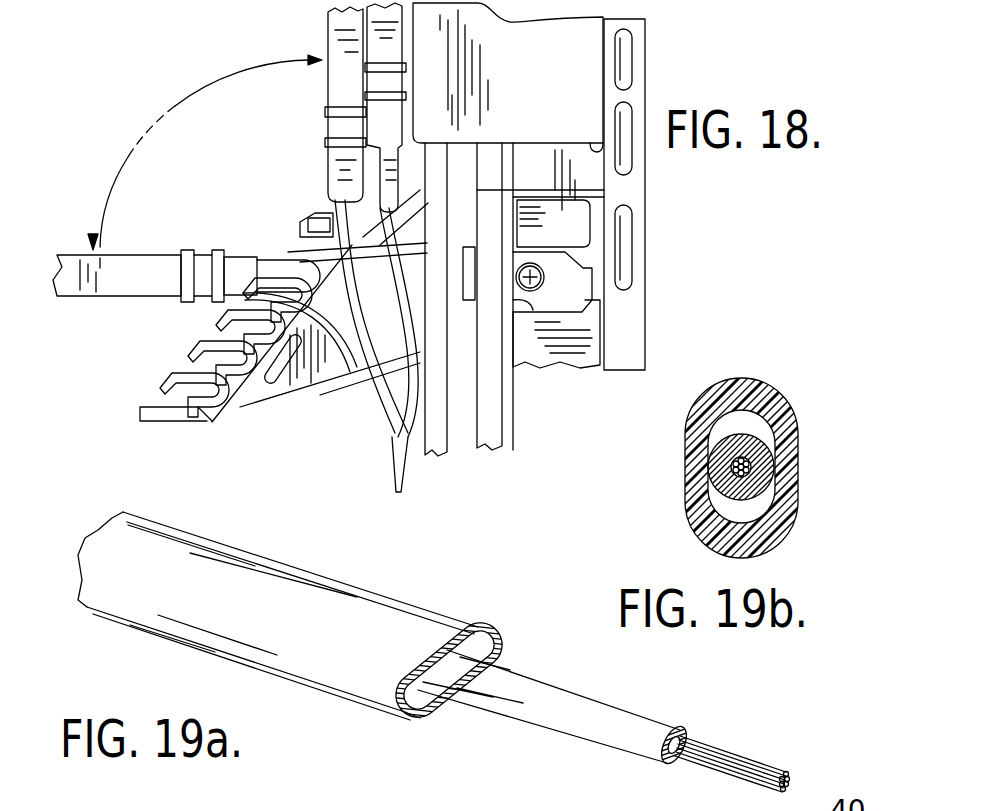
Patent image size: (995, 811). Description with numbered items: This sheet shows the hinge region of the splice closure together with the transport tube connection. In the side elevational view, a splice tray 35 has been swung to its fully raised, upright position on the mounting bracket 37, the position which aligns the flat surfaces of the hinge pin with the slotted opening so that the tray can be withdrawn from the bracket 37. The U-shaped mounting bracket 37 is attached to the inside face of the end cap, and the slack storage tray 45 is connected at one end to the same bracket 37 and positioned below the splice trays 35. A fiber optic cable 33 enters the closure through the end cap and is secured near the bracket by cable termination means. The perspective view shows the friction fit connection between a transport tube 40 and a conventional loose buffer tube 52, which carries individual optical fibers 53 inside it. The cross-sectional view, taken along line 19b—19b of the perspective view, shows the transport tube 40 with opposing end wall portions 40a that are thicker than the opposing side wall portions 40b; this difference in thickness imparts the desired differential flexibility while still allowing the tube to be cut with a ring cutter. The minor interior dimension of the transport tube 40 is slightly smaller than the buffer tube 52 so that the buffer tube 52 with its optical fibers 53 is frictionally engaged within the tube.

In FIG. 18, the fiber optic cable 33 is at (457, 434).
In FIG. 18, the splice tray 35 is at (330, 22).
In FIG. 18, the mounting bracket 37 is at (243, 387).
In FIG. 18, the transport tube 40 is at (392, 307).
In FIG. 19b, the transport tube 40 is at (806, 386).
In FIG. 19a, the transport tube 40 is at (345, 590).
In FIG. 19b, the end wall portion 40a is at (733, 384).
In FIG. 19a, the end wall portion 40a is at (561, 761).
In FIG. 19b, the side wall portion 40b is at (690, 470).
In FIG. 18, the slack storage tray 45 is at (548, 86).
In FIG. 19b, the loose buffer tube 52 is at (770, 434).
In FIG. 19a, the loose buffer tube 52 is at (618, 712).
In FIG. 19b, the optical fiber 53 is at (752, 472).
In FIG. 19a, the optical fiber 53 is at (743, 764).
In FIG. 19a, the section line 19b— 19b is at (440, 613).